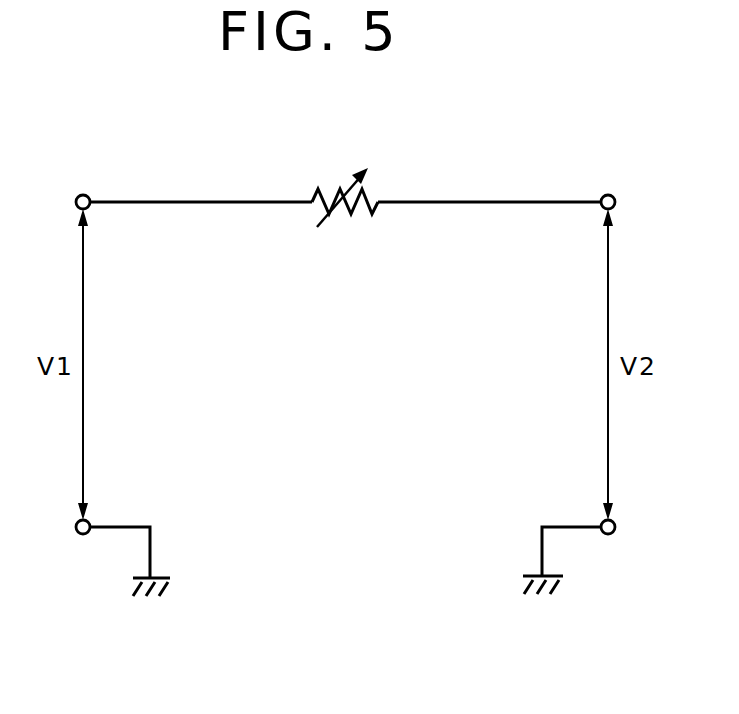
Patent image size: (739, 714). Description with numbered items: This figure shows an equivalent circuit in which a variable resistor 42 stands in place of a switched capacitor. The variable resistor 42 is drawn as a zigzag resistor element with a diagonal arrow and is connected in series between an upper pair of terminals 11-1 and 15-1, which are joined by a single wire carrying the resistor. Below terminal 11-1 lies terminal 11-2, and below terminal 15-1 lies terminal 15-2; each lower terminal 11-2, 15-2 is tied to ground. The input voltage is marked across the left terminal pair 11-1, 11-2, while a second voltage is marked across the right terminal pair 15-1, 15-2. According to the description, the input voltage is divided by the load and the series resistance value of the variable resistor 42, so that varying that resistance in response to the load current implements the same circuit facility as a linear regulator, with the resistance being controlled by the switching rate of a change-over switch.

The first terminal of element 11 11-1 is at (84, 195).
The second terminal of element 11 11-2 is at (83, 535).
The first terminal of element 15 15-1 is at (610, 195).
The second terminal of element 15 15-2 is at (609, 535).
The variable resistor 42 is at (340, 195).